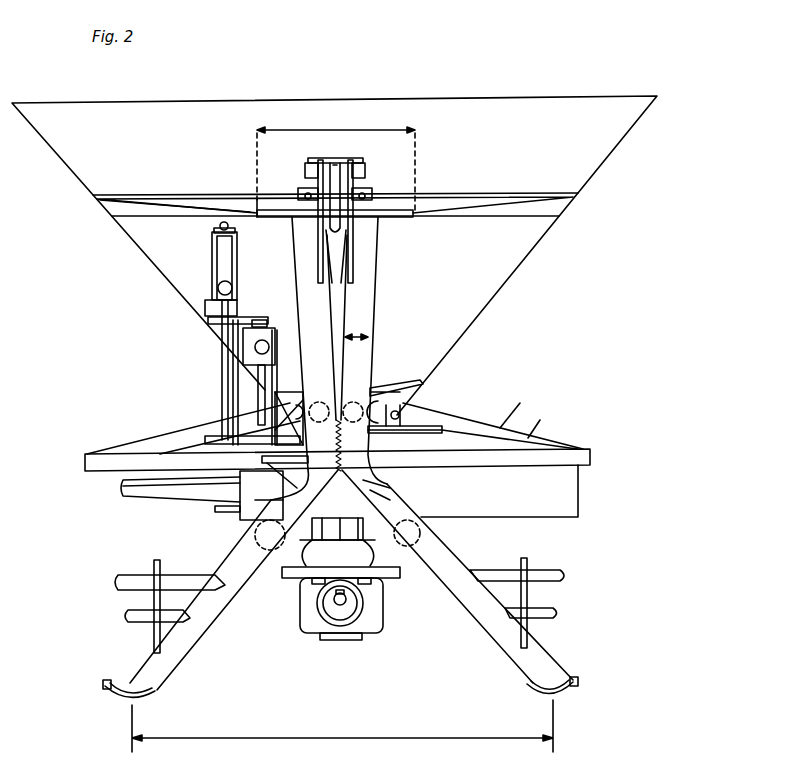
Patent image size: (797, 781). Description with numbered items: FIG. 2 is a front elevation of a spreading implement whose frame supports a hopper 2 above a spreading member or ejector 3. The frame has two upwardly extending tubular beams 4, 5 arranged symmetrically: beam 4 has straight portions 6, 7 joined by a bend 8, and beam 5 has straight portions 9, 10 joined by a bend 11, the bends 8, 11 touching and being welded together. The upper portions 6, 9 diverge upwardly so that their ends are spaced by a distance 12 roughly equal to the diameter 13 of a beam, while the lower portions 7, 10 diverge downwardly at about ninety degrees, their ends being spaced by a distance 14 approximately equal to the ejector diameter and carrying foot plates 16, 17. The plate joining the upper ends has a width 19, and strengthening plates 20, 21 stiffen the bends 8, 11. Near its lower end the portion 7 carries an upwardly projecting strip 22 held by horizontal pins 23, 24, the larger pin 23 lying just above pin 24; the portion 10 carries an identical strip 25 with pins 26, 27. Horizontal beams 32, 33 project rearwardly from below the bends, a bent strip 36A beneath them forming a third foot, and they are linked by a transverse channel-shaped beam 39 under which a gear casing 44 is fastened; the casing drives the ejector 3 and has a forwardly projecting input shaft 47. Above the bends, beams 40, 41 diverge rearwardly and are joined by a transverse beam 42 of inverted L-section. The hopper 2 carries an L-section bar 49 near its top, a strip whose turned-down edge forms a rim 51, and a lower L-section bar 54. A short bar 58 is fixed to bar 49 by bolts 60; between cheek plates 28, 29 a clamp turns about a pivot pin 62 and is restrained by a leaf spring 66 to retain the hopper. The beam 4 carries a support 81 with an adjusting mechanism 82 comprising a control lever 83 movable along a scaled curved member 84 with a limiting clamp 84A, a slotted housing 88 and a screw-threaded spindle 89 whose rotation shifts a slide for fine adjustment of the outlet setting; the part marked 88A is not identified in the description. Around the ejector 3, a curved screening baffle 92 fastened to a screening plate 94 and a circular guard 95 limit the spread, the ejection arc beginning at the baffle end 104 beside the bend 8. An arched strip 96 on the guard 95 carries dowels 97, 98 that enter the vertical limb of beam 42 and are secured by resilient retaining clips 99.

The hopper 2 is at (516, 289).
The spreading member or ejector 3 is at (135, 496).
The tubular beam 4 is at (194, 639).
The tubular beam 5 is at (465, 632).
The straight portion 6 is at (294, 278).
The straight portion 7 is at (158, 680).
The bend 8 is at (278, 498).
The straight portion 9 is at (375, 308).
The straight portion 10 is at (512, 668).
The bend 11 is at (392, 500).
The distance 12 is at (336, 238).
The diameter 13 is at (356, 328).
The distance 14 is at (327, 740).
The foot plate 16 is at (104, 690).
The foot plate 17 is at (574, 682).
The width 19 is at (345, 132).
The strengthening plate 20 is at (284, 478).
The strengthening plate 21 is at (392, 483).
The strip 22 is at (160, 560).
The pin 23 is at (130, 575).
The pin 24 is at (128, 618).
The strip 25 is at (528, 565).
The pin 26 is at (566, 574).
The pin 27 is at (558, 612).
The cheek plate 28 is at (318, 240).
The cheek plate 29 is at (353, 258).
The beam 32 is at (278, 553).
The beam 33 is at (405, 553).
The bent strip 36A is at (322, 640).
The transverse channel-shaped beam 39 is at (335, 540).
The beam 40 is at (319, 402).
The beam 41 is at (353, 402).
The transverse beam 42 is at (415, 415).
The gear casing 44 is at (300, 621).
The input shaft 47 is at (345, 608).
The bar 49 is at (470, 195).
The rim 51 is at (405, 217).
The bar 54 is at (382, 386).
The short bar 58 is at (298, 192).
The bolts 60 is at (372, 192).
The pivot pin 62 is at (305, 170).
The leaf spring 66 is at (340, 165).
The support 81 is at (270, 456).
The adjusting mechanism 82 is at (205, 312).
The control lever 83 is at (225, 372).
The curved member 84 is at (212, 262).
The clamp 84A is at (212, 232).
The slotted housing 88 is at (252, 318).
The bracket 88A is at (292, 424).
The screw-threaded spindle 89 is at (270, 328).
The screening baffle 92 is at (580, 494).
The screening plate 94 is at (483, 425).
The circular guard 95 is at (592, 449).
The arched strip 96 is at (530, 438).
The dowel 97 is at (268, 395).
The dowel 98 is at (388, 402).
The resilient retaining clips 99 is at (398, 411).
The end 104 is at (228, 512).